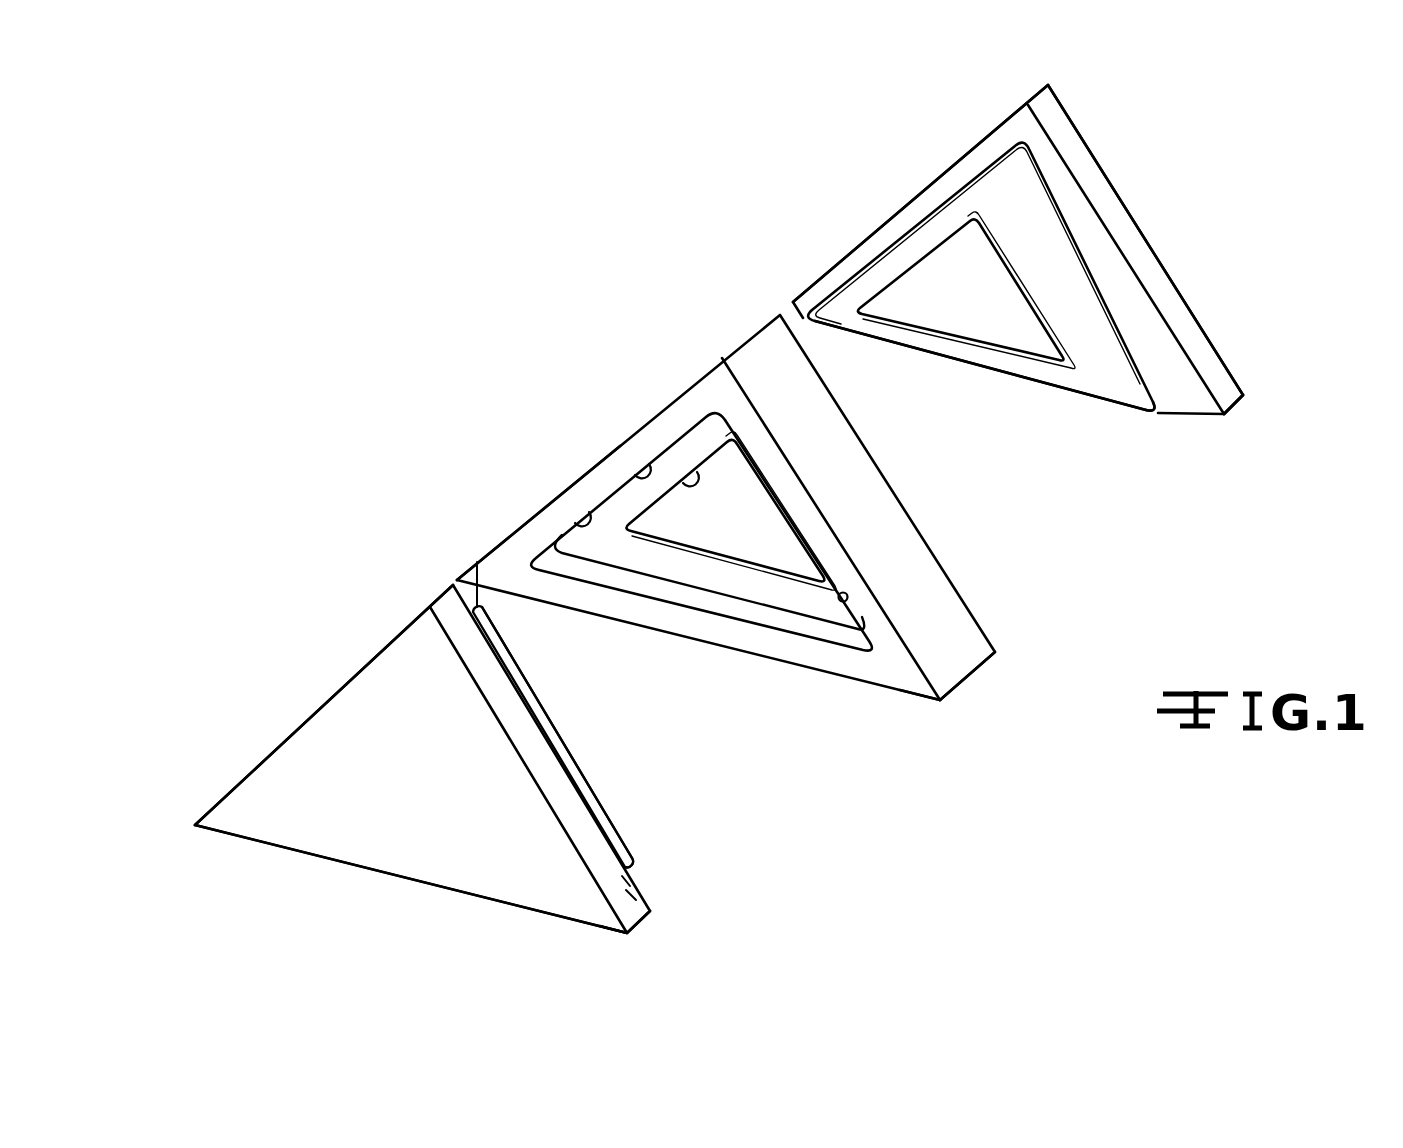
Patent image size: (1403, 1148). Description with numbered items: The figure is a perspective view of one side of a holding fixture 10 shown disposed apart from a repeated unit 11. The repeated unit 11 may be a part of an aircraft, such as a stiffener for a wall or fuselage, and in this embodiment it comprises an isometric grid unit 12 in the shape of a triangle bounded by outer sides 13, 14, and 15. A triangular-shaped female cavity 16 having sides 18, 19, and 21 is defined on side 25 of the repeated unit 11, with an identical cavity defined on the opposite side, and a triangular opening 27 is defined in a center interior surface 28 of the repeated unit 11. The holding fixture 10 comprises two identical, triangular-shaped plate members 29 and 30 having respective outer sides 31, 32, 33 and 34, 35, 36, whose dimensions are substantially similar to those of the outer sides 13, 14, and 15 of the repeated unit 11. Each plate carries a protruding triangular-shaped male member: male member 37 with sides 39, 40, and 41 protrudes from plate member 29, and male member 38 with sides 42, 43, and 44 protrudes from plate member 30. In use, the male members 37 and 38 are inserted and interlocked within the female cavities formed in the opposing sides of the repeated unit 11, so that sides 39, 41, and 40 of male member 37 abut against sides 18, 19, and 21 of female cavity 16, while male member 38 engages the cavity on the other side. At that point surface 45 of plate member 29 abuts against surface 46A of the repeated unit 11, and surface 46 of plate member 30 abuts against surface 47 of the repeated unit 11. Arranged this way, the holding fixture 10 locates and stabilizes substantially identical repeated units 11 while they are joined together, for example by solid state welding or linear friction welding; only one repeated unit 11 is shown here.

The holding fixture 10 is at (625, 908).
The repeated unit 11 is at (800, 590).
The isometric grid unit 12 is at (927, 540).
The outer side 13 is at (580, 468).
The outer side 14 is at (683, 638).
The outer side 15 is at (882, 487).
The female cavity 16 is at (640, 470).
The side of female cavity 18 is at (553, 500).
The side of female cavity 19 is at (722, 612).
The side of female cavity 21 is at (847, 590).
The side of repeated unit 25 is at (788, 650).
The triangular opening 27 is at (690, 475).
The center interior surface 28 is at (868, 680).
The plate member 29 is at (455, 893).
The plate member 30 is at (1088, 166).
The outer side 31 is at (325, 695).
The outer side 32 is at (297, 852).
The outer side 33 is at (628, 883).
The outer side 34 is at (835, 262).
The outer side 35 is at (1187, 404).
The outer side 36 is at (1183, 310).
The male member 37 is at (602, 807).
The male member 38 is at (965, 190).
The side of male member 39 is at (473, 560).
The side of male member 40 is at (515, 672).
The side of male member 41 is at (630, 865).
The side of male member 42 is at (907, 238).
The side of male member 43 is at (1082, 253).
The side of male member 44 is at (1037, 385).
The surface of plate member 45 is at (633, 898).
The surface of plate member 46 is at (912, 697).
The surface of repeated unit 46A is at (1200, 390).
The surface of repeated unit 47 is at (947, 573).